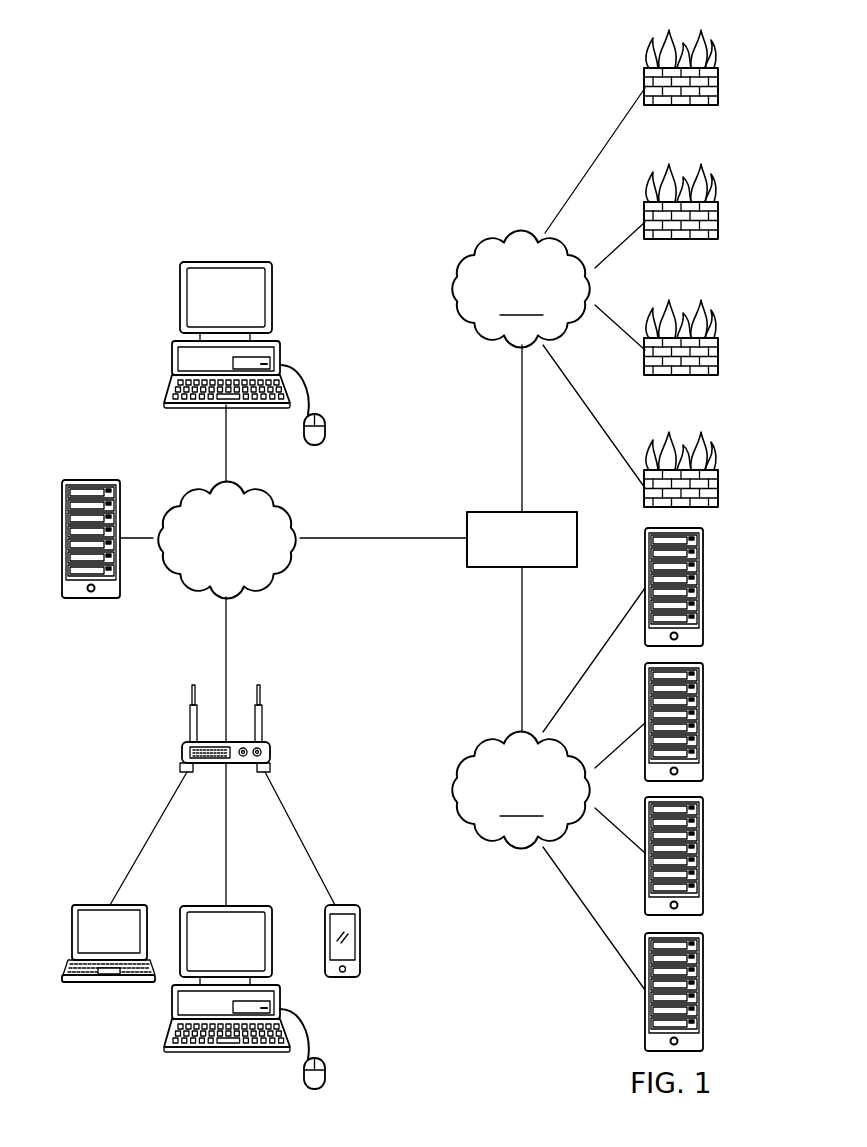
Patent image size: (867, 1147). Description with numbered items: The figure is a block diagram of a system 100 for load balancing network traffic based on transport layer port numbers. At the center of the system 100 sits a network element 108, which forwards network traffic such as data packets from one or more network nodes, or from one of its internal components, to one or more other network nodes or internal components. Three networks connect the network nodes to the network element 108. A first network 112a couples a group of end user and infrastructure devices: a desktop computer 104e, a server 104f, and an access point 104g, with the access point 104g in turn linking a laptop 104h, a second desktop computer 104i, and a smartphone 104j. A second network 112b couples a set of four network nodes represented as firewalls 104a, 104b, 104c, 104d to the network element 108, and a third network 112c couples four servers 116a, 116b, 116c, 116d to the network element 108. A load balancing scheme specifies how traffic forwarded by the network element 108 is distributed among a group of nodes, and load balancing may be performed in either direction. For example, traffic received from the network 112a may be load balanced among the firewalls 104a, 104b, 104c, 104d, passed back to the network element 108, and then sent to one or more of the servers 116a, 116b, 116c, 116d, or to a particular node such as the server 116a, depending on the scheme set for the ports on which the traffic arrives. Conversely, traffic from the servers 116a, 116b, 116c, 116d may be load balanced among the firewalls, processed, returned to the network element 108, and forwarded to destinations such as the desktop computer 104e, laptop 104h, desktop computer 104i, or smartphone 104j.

The system 100 is at (268, 132).
The firewall 104a is at (718, 86).
The firewall 104b is at (718, 220).
The firewall 104c is at (718, 354).
The firewall 104d is at (718, 488).
The desktop computer 104e is at (178, 297).
The server 104f is at (88, 479).
The access point 104g is at (190, 735).
The laptop 104h is at (91, 983).
The desktop computer 104i is at (208, 1053).
The smartphone 104j is at (361, 940).
The network element 108 is at (540, 511).
The network 112a is at (175, 492).
The network 112b is at (521, 289).
The network 112c is at (521, 790).
The server 116a is at (705, 604).
The server 116b is at (705, 738).
The server 116c is at (705, 873).
The server 116d is at (705, 1006).